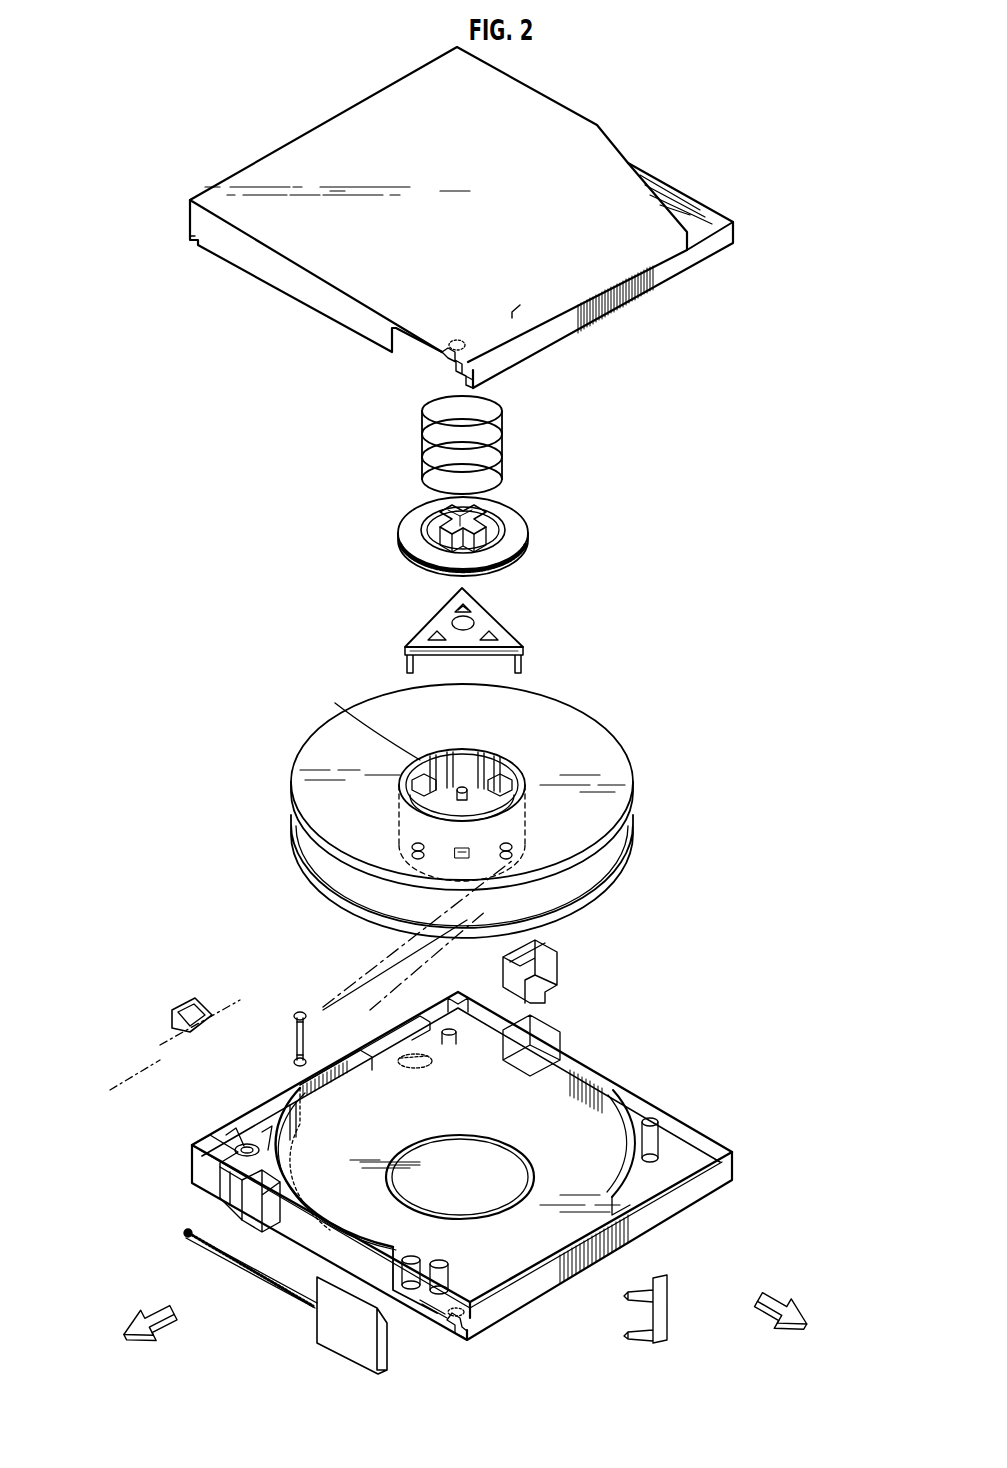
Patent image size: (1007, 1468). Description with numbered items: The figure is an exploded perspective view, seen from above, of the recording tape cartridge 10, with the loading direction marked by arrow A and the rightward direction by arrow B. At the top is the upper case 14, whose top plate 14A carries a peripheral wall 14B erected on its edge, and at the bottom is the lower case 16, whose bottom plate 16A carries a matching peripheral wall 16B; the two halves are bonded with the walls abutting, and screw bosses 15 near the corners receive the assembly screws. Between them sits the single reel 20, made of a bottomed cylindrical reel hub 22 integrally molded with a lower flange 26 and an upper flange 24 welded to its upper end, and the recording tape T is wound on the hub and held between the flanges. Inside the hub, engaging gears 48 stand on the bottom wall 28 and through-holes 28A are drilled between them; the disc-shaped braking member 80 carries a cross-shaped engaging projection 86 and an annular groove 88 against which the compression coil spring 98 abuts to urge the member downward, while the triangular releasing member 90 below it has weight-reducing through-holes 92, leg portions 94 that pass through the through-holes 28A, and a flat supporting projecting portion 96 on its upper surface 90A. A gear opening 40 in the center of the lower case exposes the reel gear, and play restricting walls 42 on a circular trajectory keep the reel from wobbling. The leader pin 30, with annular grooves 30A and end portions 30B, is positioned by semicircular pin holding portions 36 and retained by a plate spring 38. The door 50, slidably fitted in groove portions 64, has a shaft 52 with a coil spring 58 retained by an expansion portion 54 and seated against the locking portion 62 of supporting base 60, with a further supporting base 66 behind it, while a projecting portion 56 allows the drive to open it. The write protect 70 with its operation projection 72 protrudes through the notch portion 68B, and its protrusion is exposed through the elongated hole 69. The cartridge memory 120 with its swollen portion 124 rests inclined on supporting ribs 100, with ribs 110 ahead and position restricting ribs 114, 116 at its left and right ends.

The recording tape cartridge 10 is at (725, 120).
The upper case 14 is at (734, 205).
The top plate 14A is at (560, 145).
The peripheral wall 14B is at (270, 262).
The screw boss 15 is at (446, 1090).
The lower case 16 is at (449, 1151).
The bottom plate 16A is at (485, 1121).
The peripheral wall 16B is at (558, 1060).
The reel 20 is at (472, 788).
The reel hub 22 is at (520, 758).
The upper flange 24 is at (590, 745).
The lower flange 26 is at (640, 850).
The bottom wall 28 is at (445, 808).
The through-hole 28A is at (464, 785).
The leader pin 30 is at (259, 1020).
The annular groove 30A is at (296, 1022).
The end portion 30B is at (297, 1012).
The pin holding portion 36 is at (448, 358).
The plate spring 38 is at (672, 1312).
The gear opening 40 is at (498, 1142).
The play restricting wall 42 is at (618, 1100).
The engaging gear 48 is at (366, 716).
The door 50 is at (288, 1300).
The shaft 52 is at (255, 1270).
The expansion portion 54 is at (180, 1232).
The projecting portion 56 is at (360, 1362).
The coil spring 58 is at (212, 1248).
The supporting base 60 is at (372, 1172).
The locking portion 62 is at (320, 1162).
The groove portion 64 is at (440, 1322).
The supporting base 66 is at (230, 1190).
The notch portion 68B is at (410, 1010).
The elongated hole 69 is at (416, 1072).
The write protect 70 is at (561, 960).
The operation projection 72 is at (540, 945).
The braking member 80 is at (472, 514).
The engaging projection 86 is at (498, 518).
The annular groove 88 is at (428, 520).
The releasing member 90 is at (464, 619).
The upper surface 90A is at (440, 618).
The through-hole 92 is at (478, 606).
The leg portion 94 is at (404, 668).
The supporting projecting portion 96 is at (450, 623).
The compression coil spring 98 is at (503, 412).
The supporting rib 100 is at (225, 1140).
The rib 110 is at (272, 1222).
The position restricting rib 114 is at (300, 1108).
The position restricting rib 116 is at (215, 1160).
The cartridge memory 120 is at (172, 1018).
The swollen portion 124 is at (200, 1002).
The arrow A is at (778, 1300).
The arrow B is at (148, 1312).
The recording tape T is at (320, 1005).